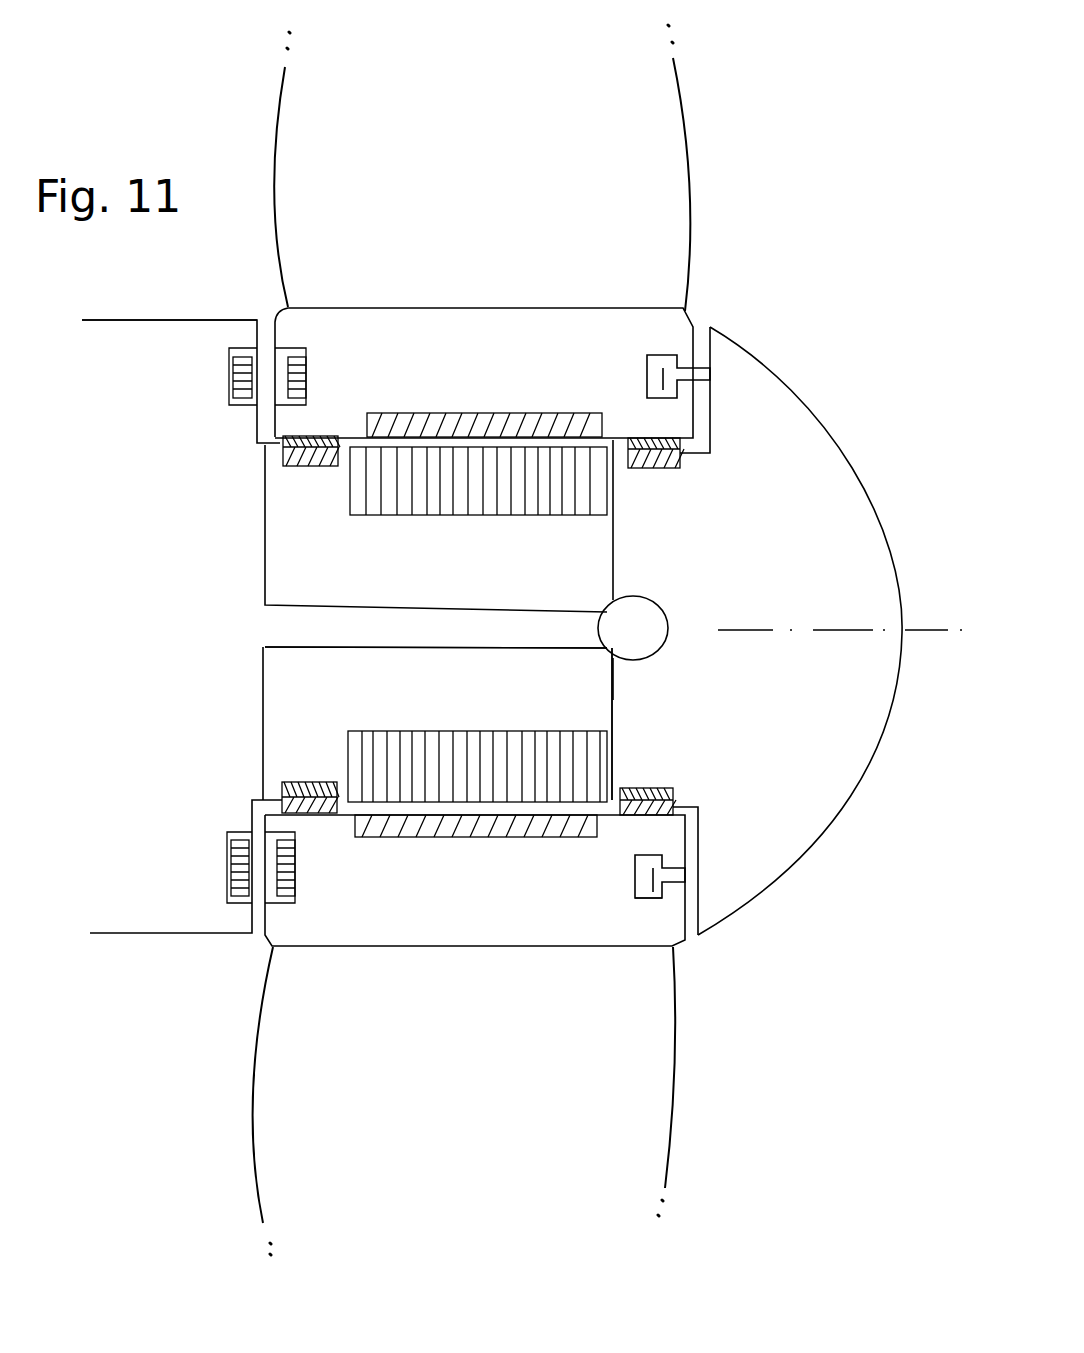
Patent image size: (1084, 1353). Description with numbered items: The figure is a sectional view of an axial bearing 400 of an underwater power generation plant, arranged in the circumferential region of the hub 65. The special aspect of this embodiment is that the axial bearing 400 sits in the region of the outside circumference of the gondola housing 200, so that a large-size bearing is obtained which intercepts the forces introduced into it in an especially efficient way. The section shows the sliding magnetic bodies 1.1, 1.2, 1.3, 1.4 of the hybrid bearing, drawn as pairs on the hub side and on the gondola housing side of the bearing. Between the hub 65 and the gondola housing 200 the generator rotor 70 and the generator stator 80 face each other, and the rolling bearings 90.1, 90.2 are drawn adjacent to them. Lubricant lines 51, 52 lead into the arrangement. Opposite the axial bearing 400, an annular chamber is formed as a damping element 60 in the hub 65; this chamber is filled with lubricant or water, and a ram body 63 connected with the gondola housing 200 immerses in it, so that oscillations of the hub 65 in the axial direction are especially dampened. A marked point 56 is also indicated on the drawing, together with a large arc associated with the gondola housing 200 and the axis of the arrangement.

The sliding magnetic body 1.1 is at (307, 348).
The sliding magnetic body 1.2 is at (226, 320).
The sliding magnetic body 1.3 is at (222, 898).
The sliding magnetic body 1.4 is at (295, 897).
The axial bearing 400 is at (212, 383).
The generator rotor 70 is at (500, 413).
The generator stator 80 is at (518, 507).
The rolling bearing 90.1 is at (313, 468).
The rolling bearing 90.2 is at (670, 468).
The hub 65 is at (662, 343).
The ram body 63 is at (662, 855).
The damping element 60 is at (635, 898).
The pivot point P 56 is at (650, 652).
The lubricant line 52 is at (531, 648).
The lubricant line 51 is at (613, 690).
The gondola housing 200 is at (855, 595).